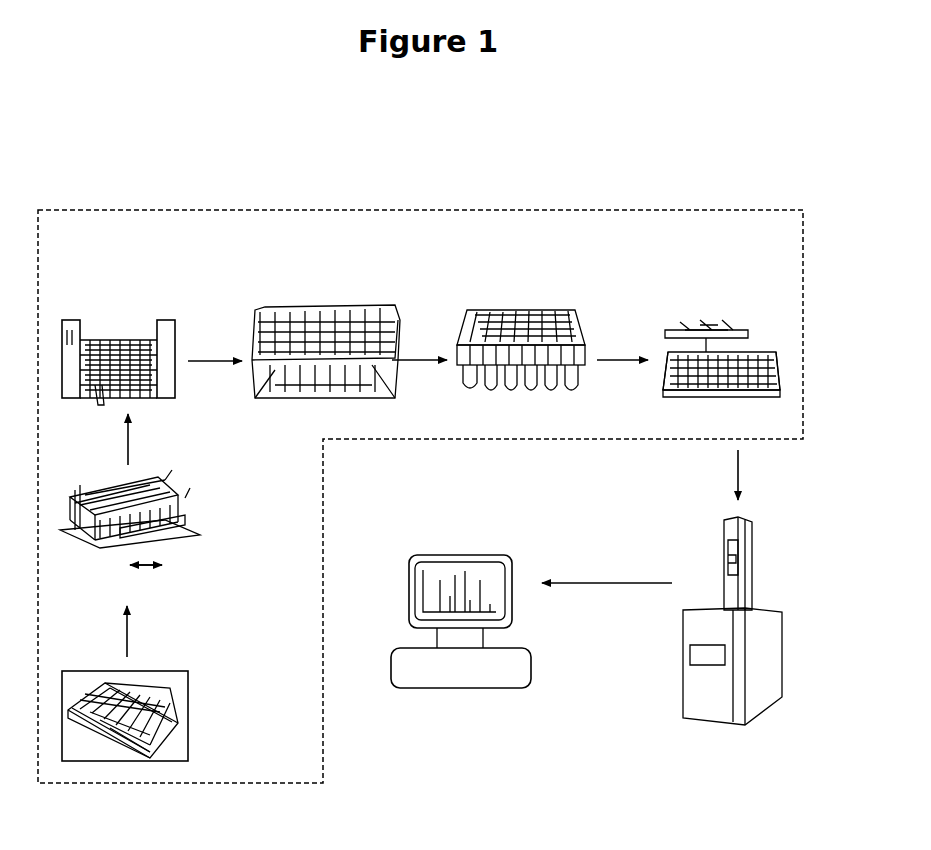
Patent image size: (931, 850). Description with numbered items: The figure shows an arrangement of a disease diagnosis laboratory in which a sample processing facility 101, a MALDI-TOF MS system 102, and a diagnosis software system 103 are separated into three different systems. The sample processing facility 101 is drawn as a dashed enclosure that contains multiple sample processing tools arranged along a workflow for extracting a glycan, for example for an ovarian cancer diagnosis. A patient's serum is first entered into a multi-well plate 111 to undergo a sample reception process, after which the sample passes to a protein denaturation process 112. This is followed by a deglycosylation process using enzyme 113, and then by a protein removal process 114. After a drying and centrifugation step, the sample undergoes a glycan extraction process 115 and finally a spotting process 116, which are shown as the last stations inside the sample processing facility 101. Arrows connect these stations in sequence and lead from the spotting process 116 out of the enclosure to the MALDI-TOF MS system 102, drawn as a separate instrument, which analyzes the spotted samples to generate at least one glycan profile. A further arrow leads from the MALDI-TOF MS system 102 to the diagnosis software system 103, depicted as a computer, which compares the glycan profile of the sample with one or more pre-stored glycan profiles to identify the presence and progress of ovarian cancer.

The sample processing facility 101 is at (610, 207).
The MALDI-TOF MS system 102 is at (755, 560).
The diagnosis software system 103 is at (530, 668).
The multi-well plate 111 is at (190, 718).
The protein denaturation process 112 is at (195, 542).
The deglycosylation process using enzyme 113 is at (122, 318).
The protein removal process 114 is at (320, 310).
The glycan extraction process 115 is at (519, 310).
The spotting process 116 is at (705, 318).